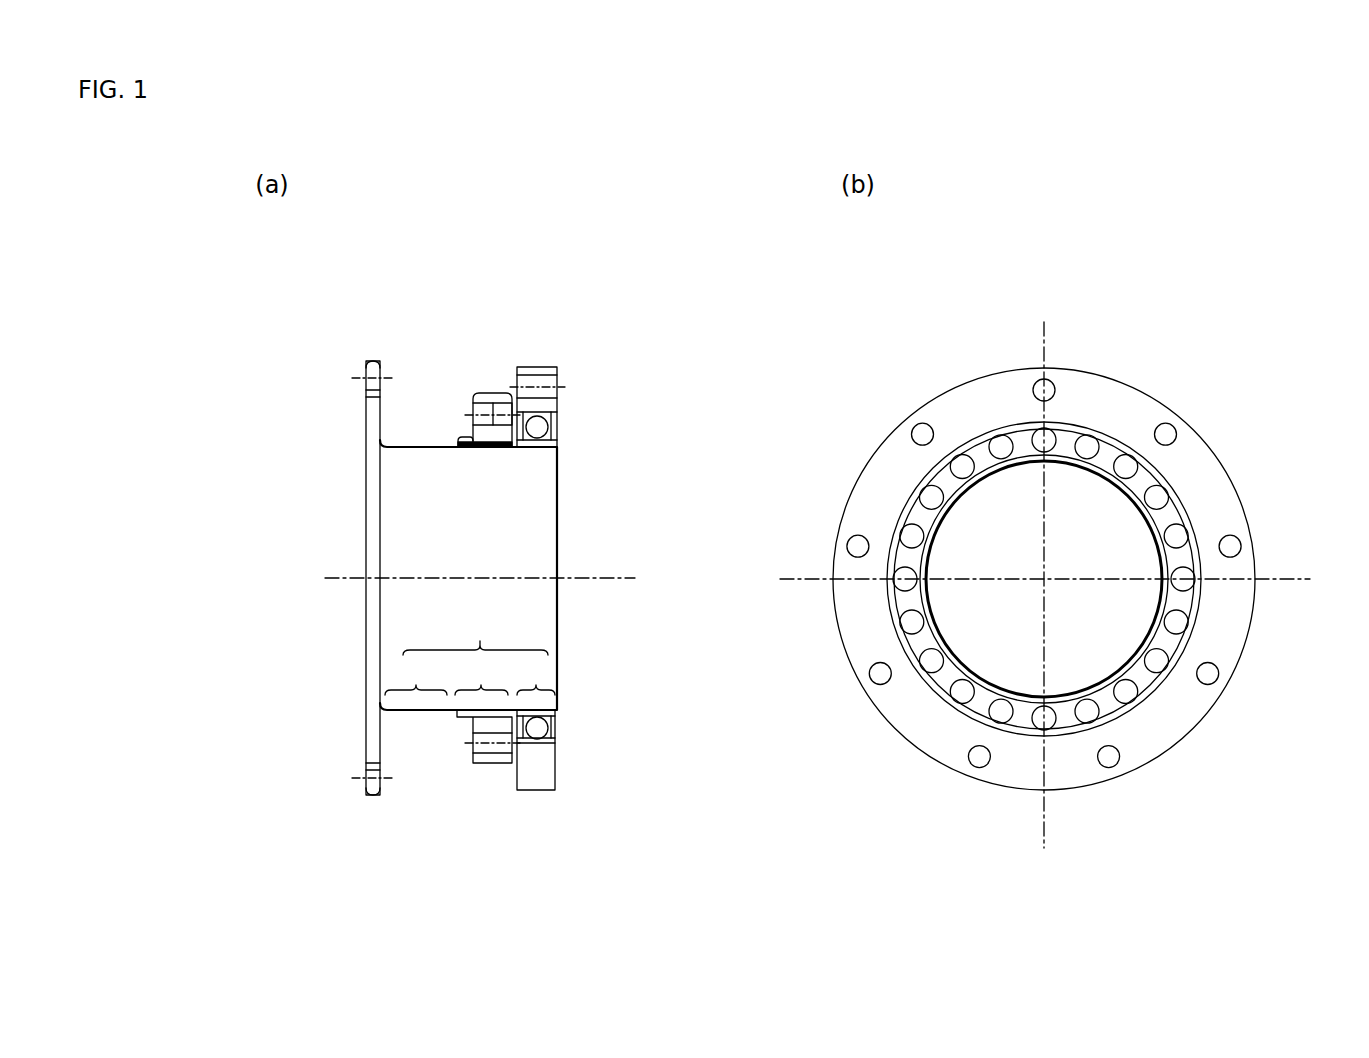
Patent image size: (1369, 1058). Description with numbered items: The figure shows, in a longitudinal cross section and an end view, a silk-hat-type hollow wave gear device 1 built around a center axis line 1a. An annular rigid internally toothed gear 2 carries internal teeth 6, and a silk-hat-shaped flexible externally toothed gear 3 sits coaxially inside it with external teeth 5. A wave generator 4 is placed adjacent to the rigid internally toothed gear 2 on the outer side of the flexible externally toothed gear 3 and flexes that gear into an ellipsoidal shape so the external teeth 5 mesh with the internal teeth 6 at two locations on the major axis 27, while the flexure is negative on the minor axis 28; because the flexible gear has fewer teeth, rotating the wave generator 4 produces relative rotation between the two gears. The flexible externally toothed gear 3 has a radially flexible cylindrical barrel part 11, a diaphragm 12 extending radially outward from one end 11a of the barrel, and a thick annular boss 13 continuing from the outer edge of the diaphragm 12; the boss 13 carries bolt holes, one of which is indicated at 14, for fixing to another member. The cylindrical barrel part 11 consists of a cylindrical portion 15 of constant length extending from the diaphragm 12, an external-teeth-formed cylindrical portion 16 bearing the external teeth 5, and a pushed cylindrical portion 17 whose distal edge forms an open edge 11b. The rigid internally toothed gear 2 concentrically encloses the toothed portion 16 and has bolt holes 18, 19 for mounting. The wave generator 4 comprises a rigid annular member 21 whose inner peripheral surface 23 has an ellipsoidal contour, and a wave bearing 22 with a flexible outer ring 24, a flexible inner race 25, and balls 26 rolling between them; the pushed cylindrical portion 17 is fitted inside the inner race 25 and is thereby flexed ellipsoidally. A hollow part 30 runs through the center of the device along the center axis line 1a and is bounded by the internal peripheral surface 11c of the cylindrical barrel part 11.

The silk-hat-type hollow wave gear device 1 is at (578, 330).
The center axis line 1a is at (340, 580).
The rigid internally toothed gear 2 is at (470, 390).
The flexible externally toothed gear 3 is at (402, 428).
The wave generator 4 is at (575, 390).
The external teeth 5 is at (470, 437).
The internal teeth 6 is at (490, 450).
The cylindrical barrel part 11 is at (1275, 512).
The one end of the cylindrical barrel part 11a is at (380, 710).
The open edge 11b is at (557, 705).
The internal peripheral surface 11c is at (430, 448).
The diaphragm 12 is at (378, 740).
The boss 13 is at (366, 775).
The flange end 14 is at (366, 785).
The cylindrical portion 15 is at (416, 676).
The external-teeth-formed cylindrical portion 16 is at (481, 676).
The pushed cylindrical portion 17 is at (536, 676).
The bolt hole 18 is at (488, 408).
The bolt hole 19 is at (490, 750).
The rigid annular member 21 is at (540, 783).
The wave bearing 22 is at (550, 723).
The inner peripheral surface 23 is at (528, 742).
The outer ring 24 is at (548, 745).
The inner race 25 is at (555, 712).
The balls 26 is at (542, 727).
The major axis 27 is at (1272, 582).
The minor axis 28 is at (1046, 330).
The hollow part 30 is at (495, 556).